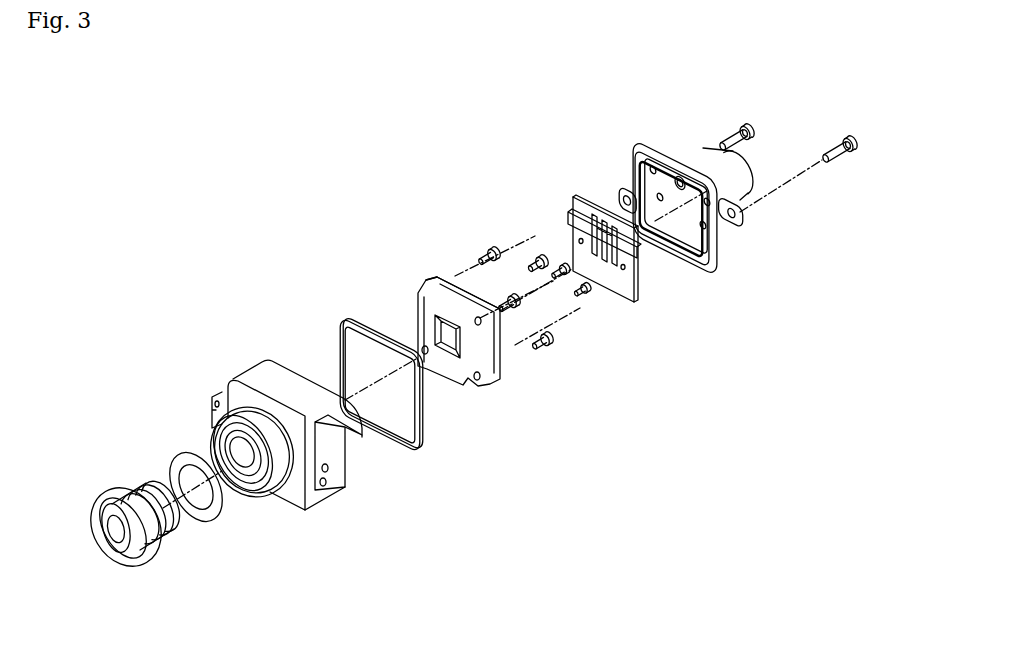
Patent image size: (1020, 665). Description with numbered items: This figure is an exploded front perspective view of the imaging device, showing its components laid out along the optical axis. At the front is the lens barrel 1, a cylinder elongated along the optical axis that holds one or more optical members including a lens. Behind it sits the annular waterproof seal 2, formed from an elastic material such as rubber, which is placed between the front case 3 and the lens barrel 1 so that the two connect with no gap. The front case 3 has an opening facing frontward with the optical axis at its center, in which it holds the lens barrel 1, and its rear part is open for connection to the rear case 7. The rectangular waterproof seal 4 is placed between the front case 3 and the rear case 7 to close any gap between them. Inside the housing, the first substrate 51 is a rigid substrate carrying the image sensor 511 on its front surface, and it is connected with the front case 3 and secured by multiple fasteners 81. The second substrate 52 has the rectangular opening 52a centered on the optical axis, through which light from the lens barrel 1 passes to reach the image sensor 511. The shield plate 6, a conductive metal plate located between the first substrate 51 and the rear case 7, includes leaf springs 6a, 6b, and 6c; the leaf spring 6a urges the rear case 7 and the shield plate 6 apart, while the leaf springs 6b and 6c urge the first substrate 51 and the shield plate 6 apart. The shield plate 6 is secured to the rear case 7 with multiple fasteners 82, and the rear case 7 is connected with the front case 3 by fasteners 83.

The lens barrel 1 is at (106, 494).
The waterproof seal 2 is at (183, 453).
The front case 3 is at (253, 366).
The waterproof seal 4 is at (347, 318).
The first substrate 51 is at (458, 286).
The image sensor 511 is at (428, 280).
The second substrate 52 is at (418, 294).
The opening 52a is at (450, 358).
The shield plate 6 is at (582, 196).
The leaf spring 6a is at (623, 280).
The leaf spring 6b is at (584, 212).
The leaf spring 6c is at (641, 292).
The rear case 7 is at (665, 137).
The fasteners 81 is at (490, 250).
The fasteners 82 is at (557, 262).
The fasteners 83 is at (740, 128).